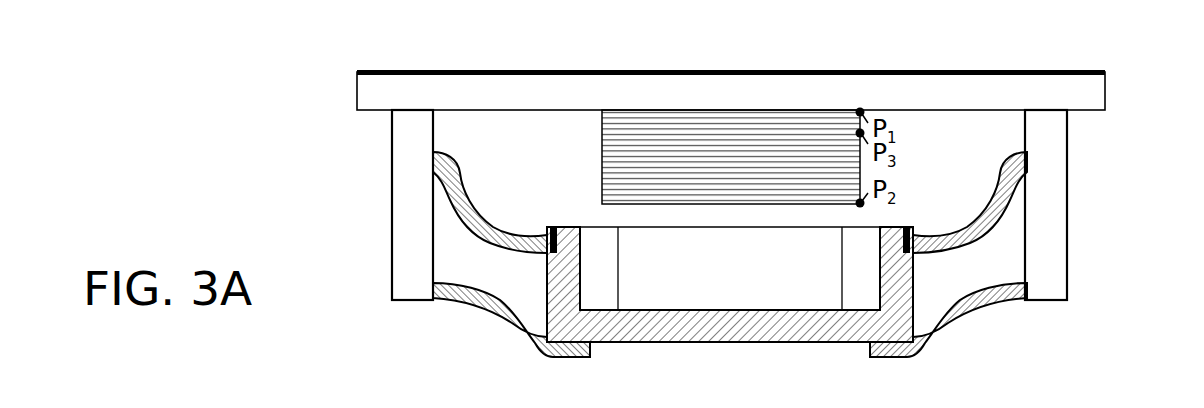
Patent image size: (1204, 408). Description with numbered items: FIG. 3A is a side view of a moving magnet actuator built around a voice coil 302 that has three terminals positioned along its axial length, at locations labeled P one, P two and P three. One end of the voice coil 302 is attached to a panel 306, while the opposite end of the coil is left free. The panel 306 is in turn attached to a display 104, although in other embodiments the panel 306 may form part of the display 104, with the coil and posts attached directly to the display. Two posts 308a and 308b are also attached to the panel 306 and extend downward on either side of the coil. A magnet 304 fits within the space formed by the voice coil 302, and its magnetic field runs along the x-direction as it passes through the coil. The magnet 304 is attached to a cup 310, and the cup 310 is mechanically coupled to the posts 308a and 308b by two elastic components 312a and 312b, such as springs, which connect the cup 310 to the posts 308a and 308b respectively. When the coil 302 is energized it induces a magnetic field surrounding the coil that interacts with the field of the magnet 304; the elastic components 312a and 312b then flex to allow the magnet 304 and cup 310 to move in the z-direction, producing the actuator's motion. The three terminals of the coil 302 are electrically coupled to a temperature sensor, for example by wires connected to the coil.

The display 104 is at (945, 66).
The panel 306 is at (353, 90).
The post 308a is at (388, 279).
The post 308b is at (1072, 278).
The voice coil 302 is at (596, 146).
The magnet 304 is at (611, 237).
The cup 310 is at (735, 347).
The elastic component 312a is at (483, 297).
The elastic component 312b is at (970, 302).